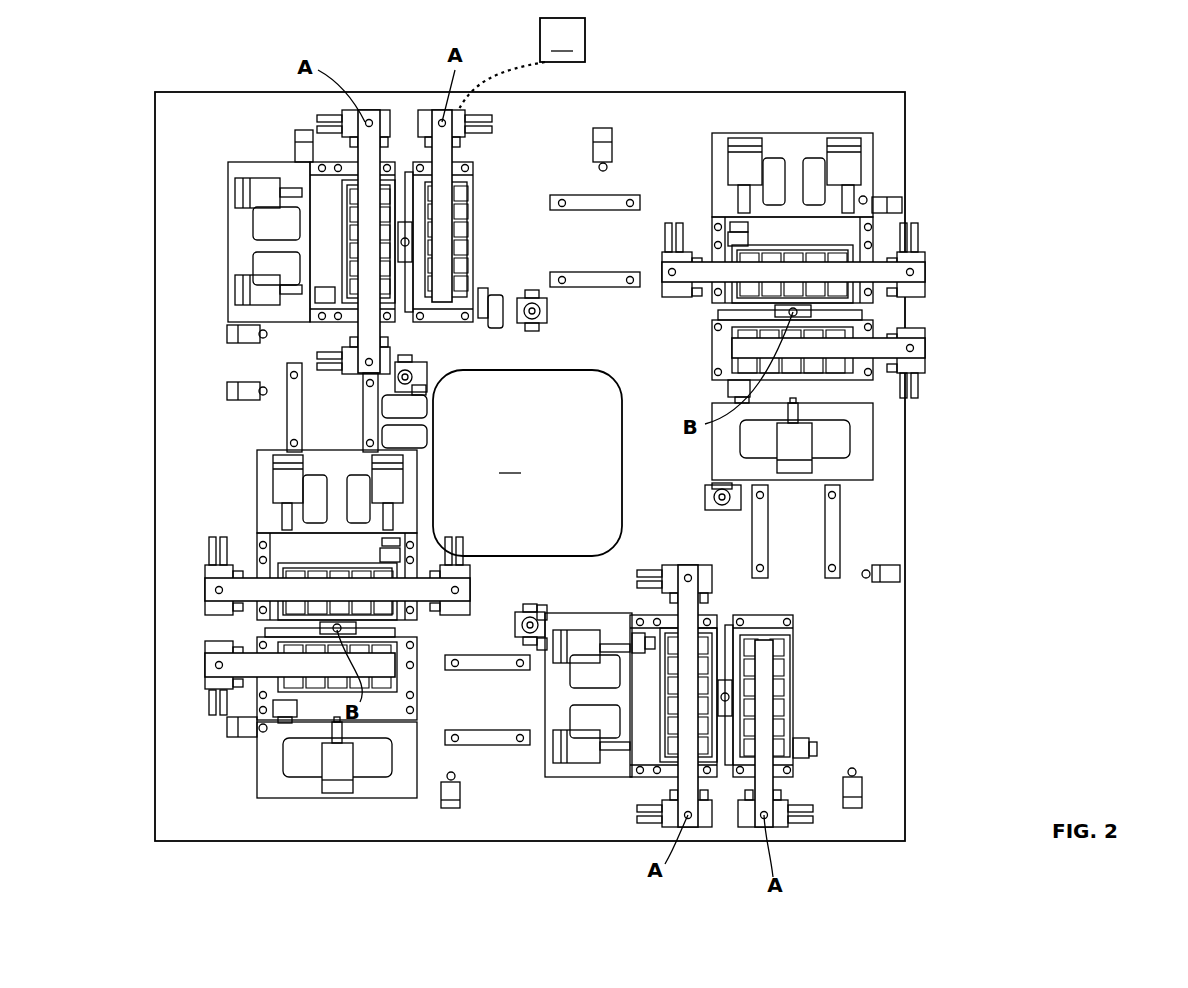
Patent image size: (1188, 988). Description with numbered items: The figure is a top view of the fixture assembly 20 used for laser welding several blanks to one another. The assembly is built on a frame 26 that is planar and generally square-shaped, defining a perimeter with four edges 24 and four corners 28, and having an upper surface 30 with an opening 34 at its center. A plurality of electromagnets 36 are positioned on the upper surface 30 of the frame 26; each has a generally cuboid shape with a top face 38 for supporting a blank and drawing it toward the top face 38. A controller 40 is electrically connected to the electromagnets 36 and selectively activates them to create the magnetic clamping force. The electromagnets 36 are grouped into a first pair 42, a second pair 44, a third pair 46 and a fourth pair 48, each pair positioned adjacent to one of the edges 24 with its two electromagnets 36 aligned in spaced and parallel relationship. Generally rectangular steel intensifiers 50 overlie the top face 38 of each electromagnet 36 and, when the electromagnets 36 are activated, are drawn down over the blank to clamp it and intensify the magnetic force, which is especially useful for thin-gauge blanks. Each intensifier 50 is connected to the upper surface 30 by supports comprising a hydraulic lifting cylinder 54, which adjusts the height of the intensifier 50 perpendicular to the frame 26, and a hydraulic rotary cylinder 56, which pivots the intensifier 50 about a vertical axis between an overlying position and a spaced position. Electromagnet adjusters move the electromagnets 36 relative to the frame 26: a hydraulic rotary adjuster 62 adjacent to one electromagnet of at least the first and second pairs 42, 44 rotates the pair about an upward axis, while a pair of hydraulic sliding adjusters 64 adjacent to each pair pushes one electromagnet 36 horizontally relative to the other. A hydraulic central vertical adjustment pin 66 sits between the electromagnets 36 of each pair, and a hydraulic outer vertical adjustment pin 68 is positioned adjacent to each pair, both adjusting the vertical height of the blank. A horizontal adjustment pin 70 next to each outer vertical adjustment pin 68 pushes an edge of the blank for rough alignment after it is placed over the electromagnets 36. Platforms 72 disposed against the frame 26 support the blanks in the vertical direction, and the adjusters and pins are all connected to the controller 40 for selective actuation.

The fixture assembly 20 is at (1018, 189).
The edges 24 is at (680, 92).
The frame 26 is at (628, 92).
The corners 28 is at (155, 92).
The upper surface 30 is at (905, 688).
The opening 34 is at (527, 463).
The electromagnets 36 is at (335, 197).
The top face 38 is at (465, 277).
The controller 40 is at (520, 68).
The first pair 42 is at (135, 606).
The second pair 44 is at (968, 321).
The third pair 46 is at (365, 102).
The fourth pair 48 is at (705, 845).
The intensifiers 50 is at (363, 220).
The hydraulic lifting cylinder 54 is at (383, 113).
The hydraulic rotary cylinder 56 is at (365, 122).
The hydraulic rotary adjuster 62 is at (805, 447).
The hydraulic sliding adjusters 64 is at (745, 135).
The hydraulic central vertical adjustment pin 66 is at (408, 242).
The hydraulic outer vertical adjustment pin 68 is at (532, 320).
The horizontal adjustment pin 70 is at (226, 391).
The platforms 72 is at (590, 203).